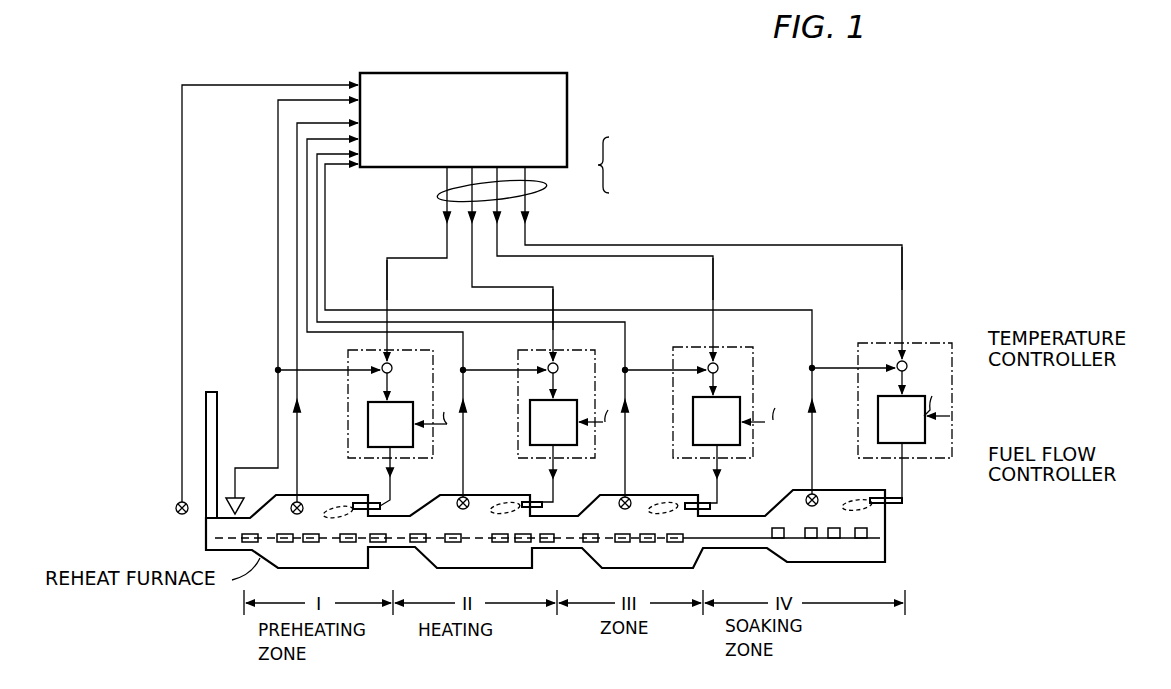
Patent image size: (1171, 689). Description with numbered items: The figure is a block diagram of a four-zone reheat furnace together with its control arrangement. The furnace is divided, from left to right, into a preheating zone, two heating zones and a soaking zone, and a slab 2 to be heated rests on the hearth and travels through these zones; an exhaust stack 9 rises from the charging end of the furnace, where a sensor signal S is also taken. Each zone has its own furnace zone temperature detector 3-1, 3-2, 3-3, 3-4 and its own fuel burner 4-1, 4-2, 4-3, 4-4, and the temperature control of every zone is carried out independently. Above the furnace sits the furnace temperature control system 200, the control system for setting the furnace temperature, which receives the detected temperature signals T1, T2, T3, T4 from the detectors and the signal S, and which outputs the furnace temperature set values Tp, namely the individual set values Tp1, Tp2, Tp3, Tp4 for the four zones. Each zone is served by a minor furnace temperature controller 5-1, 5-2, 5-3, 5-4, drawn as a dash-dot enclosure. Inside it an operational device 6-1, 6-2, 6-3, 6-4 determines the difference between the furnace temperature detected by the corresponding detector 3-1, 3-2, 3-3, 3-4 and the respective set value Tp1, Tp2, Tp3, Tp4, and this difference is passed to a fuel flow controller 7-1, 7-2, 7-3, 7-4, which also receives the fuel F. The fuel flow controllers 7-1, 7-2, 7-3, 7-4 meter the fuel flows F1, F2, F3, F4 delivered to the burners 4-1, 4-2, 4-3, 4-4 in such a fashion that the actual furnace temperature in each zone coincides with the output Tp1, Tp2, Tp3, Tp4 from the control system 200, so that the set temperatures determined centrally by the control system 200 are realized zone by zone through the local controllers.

The furnace temperature control system 200 is at (567, 76).
The exhaust stack 9 is at (218, 396).
The slab charging sensor S is at (241, 498).
The slab 2 is at (312, 543).
The furnace zone temperature detector 3-1 is at (300, 500).
The furnace zone temperature detector 3-2 is at (466, 496).
The furnace zone temperature detector 3-3 is at (628, 497).
The furnace zone temperature detector 3-4 is at (819, 500).
The fuel burner 4-1 is at (366, 503).
The fuel burner 4-2 is at (538, 501).
The fuel burner 4-3 is at (704, 500).
The fuel burner 4-4 is at (892, 503).
The minor furnace temperature controller 5-1 is at (347, 362).
The minor furnace temperature controller 5-2 is at (524, 350).
The minor furnace temperature controller 5-3 is at (698, 346).
The minor furnace temperature controller 5-4 is at (938, 342).
The operational device 6-1 is at (391, 373).
The operational device 6-2 is at (557, 364).
The operational device 6-3 is at (718, 364).
The operational device 6-4 is at (897, 360).
The fuel flow controller 7-1 is at (373, 400).
The fuel flow controller 7-2 is at (538, 400).
The fuel flow controller 7-3 is at (740, 394).
The fuel flow controller 7-4 is at (925, 430).
The measured temperature signal zone I T1 is at (300, 428).
The measured temperature signal zone II T2 is at (466, 428).
The measured temperature signal zone III T3 is at (628, 428).
The measured temperature signal zone IV T4 is at (815, 428).
The fuel flow F1 is at (395, 476).
The fuel flow F2 is at (557, 478).
The fuel flow F3 is at (720, 480).
The fuel flow F4 is at (905, 478).
The furnace temperature set values Tp is at (546, 188).
The furnace temperature set value Tp1 is at (387, 292).
The furnace temperature set value Tp2 is at (553, 292).
The furnace temperature set value Tp3 is at (713, 284).
The furnace temperature set value Tp4 is at (902, 270).